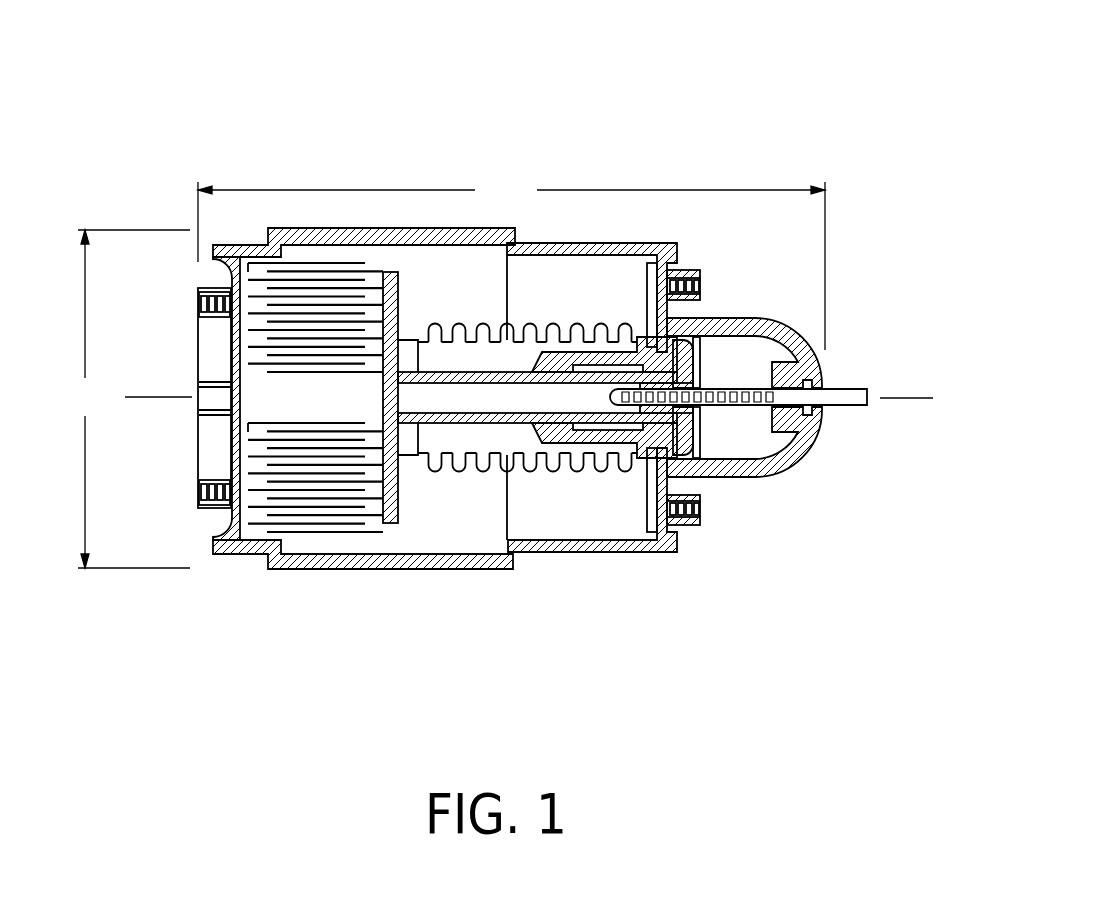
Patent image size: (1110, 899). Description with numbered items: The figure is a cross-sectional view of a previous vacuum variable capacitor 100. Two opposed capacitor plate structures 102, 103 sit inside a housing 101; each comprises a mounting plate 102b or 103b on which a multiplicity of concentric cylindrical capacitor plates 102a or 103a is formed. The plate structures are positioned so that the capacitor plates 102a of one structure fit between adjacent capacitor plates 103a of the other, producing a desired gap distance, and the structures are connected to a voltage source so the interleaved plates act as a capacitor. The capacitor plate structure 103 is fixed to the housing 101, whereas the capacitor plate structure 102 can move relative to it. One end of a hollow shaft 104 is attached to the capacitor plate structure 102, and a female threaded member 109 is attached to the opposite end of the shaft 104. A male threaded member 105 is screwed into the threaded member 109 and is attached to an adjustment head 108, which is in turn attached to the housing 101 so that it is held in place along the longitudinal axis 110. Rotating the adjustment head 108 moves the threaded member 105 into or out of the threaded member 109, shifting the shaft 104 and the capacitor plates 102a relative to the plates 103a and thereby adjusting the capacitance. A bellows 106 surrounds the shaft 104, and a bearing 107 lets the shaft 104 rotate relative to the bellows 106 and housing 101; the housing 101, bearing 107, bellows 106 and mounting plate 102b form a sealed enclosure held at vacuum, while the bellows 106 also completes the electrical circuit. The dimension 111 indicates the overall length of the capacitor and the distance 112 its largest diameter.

The vacuum variable capacitor 100 is at (525, 126).
The housing 101 is at (515, 556).
The capacitor plate structure 102 is at (417, 515).
The capacitor plates 102a is at (372, 520).
The mounting plate 102b is at (387, 527).
The capacitor plate structure 103 is at (256, 404).
The capacitor plates 103a is at (300, 533).
The mounting plate 103b is at (246, 530).
The hollow shaft 104 is at (473, 467).
The male threaded member 105 is at (760, 410).
The bellows 106 is at (580, 463).
The bearing 107 is at (635, 458).
The adjustment head 108 is at (736, 470).
The female threaded member 109 is at (685, 428).
The longitudinal axis 110 is at (910, 403).
The dimension 111 is at (511, 261).
The distance 112 is at (127, 399).